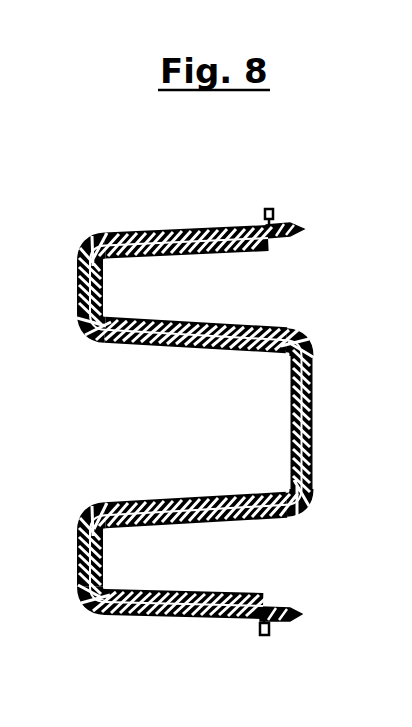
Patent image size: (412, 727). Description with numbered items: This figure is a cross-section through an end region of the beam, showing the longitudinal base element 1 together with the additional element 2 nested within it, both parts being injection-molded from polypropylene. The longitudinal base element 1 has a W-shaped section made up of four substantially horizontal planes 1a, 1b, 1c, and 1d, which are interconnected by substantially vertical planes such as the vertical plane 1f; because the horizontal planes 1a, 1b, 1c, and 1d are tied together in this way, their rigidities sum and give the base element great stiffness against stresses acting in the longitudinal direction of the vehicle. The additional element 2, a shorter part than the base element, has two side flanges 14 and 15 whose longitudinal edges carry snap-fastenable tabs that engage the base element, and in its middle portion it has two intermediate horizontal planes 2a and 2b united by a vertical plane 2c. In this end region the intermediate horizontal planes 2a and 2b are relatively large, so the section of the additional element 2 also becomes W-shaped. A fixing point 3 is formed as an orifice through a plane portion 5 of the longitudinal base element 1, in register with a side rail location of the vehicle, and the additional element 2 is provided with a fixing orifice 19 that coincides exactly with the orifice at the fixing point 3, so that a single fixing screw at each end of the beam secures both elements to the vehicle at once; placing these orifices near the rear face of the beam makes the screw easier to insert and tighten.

The longitudinal base element 1 is at (206, 426).
The horizontal plane 1a is at (213, 237).
The horizontal plane 1b is at (213, 325).
The horizontal plane 1c is at (243, 520).
The horizontal plane 1d is at (183, 592).
The vertical plane 1f is at (312, 400).
The additional element 2 is at (58, 235).
The intermediate horizontal plane 2a is at (167, 343).
The intermediate horizontal plane 2b is at (178, 505).
The vertical plane 2c is at (297, 410).
The fixing point 3 is at (312, 453).
The plane portion 5 is at (320, 355).
The side flange 14 is at (160, 233).
The side flange 15 is at (157, 615).
The fixing orifice 19 is at (290, 453).